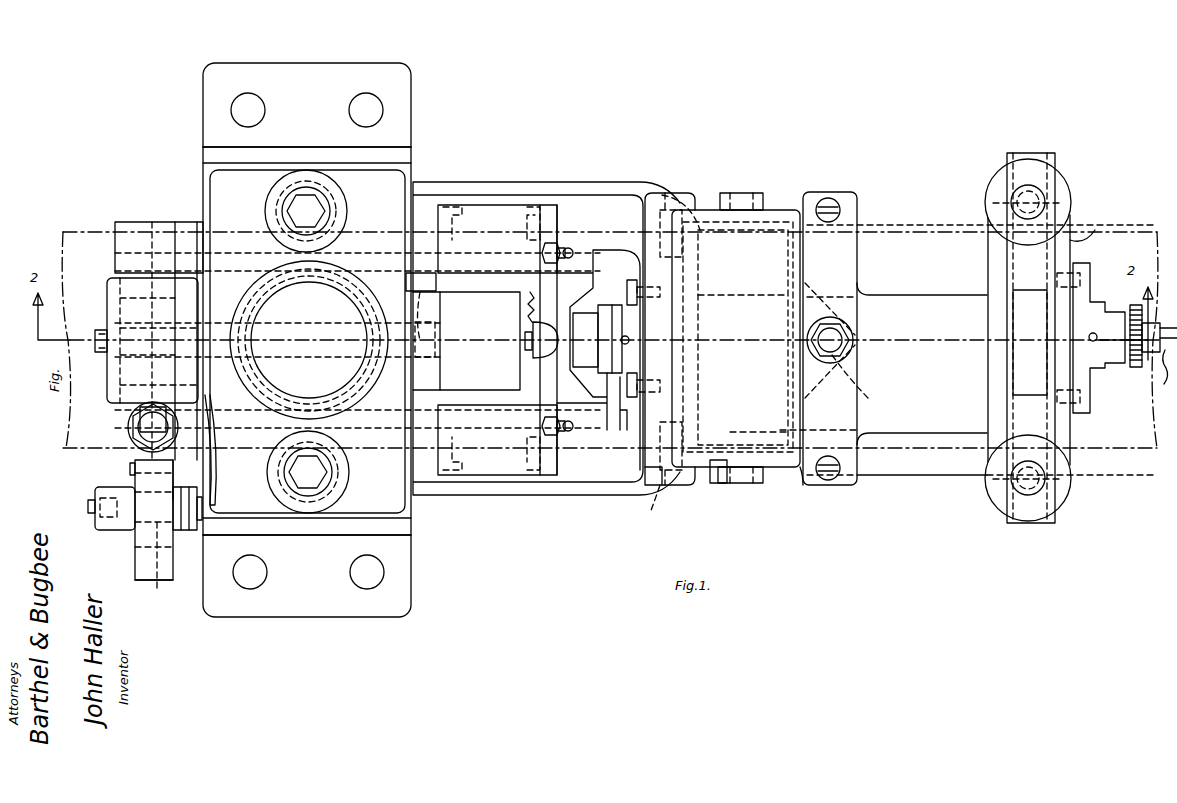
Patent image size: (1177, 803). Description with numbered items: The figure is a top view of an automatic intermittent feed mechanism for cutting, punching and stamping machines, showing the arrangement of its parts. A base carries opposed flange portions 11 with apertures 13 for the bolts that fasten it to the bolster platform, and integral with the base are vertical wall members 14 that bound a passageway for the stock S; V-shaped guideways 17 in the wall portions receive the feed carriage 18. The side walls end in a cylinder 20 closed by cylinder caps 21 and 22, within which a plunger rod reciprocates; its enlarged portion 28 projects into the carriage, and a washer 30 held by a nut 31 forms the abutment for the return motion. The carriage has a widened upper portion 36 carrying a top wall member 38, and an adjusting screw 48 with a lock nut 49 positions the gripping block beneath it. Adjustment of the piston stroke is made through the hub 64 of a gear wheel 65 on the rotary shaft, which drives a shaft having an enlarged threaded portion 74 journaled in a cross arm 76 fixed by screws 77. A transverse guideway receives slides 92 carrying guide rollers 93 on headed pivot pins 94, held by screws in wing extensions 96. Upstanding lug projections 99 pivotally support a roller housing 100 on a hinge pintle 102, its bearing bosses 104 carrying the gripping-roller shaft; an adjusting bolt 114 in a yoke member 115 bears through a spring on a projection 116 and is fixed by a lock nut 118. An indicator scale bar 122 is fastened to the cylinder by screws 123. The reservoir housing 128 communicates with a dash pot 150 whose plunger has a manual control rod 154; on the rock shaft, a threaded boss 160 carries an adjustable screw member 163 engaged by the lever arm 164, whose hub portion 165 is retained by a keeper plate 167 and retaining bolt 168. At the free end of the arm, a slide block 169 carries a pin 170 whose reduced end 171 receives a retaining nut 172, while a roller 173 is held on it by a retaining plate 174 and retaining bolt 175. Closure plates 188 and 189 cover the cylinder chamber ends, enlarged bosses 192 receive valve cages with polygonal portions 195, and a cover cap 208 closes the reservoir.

The flange portions 11 is at (321, 62).
The apertures 13 is at (372, 98).
The vertical wall members 14 is at (521, 181).
The V-shaped guideways 17 is at (175, 258).
The feed carriage 18 is at (600, 292).
The cylinder 20 is at (925, 430).
The cylinder cap 21 is at (618, 310).
The cylinder cap 22 is at (1097, 366).
The enlarged portion 28 is at (585, 340).
The washer 30 is at (421, 282).
The nut 31 is at (418, 350).
The widened upper portion 36 is at (482, 207).
The top wall member 38 is at (487, 440).
The adjusting screw 48 is at (573, 250).
The lock nut 49 is at (553, 243).
The hub 64 is at (1159, 352).
The gear wheel 65 is at (1136, 368).
The enlarged threaded portion 74 is at (287, 352).
The cross arm 76 is at (107, 319).
The screws 77 is at (1170, 372).
The slides 92 is at (1050, 163).
The guide rollers 93 is at (1060, 183).
The headed pivot pins 94 is at (1018, 200).
The wing extensions 96 is at (1085, 240).
The upstanding lug projections 99 is at (680, 196).
The roller housing 100 is at (762, 248).
The hinge pintle 102 is at (668, 190).
The bearing bosses 104 is at (712, 195).
The adjusting bolt 114 is at (848, 350).
The yoke member 115 is at (842, 270).
The projection 116 is at (858, 407).
The lock nut 118 is at (832, 350).
The indicator scale bar 122 is at (900, 478).
The screws 123 is at (715, 485).
The reservoir housing 128 is at (402, 175).
The dash pot 150 is at (470, 295).
The manual control rod 154 is at (532, 322).
The threaded boss 160 is at (128, 432).
The adjustable screw member 163 is at (140, 418).
The lever arm 164 is at (165, 585).
The hub portion 165 is at (132, 290).
The keeper plate 167 is at (107, 302).
The retaining bolt 168 is at (99, 352).
The slide block 169 is at (133, 525).
The pin 170 is at (150, 585).
The reduced end 171 is at (197, 522).
The retaining nut 172 is at (192, 540).
The roller 173 is at (110, 487).
The retaining plate 174 is at (90, 512).
The retaining bolt 175 is at (95, 505).
The closure plate 188 is at (302, 145).
The closure plate 189 is at (293, 528).
The enlarged bosses 192 is at (275, 219).
The polygonal portions 195 is at (320, 210).
The cover cap 208 is at (348, 315).
The stock S is at (903, 230).